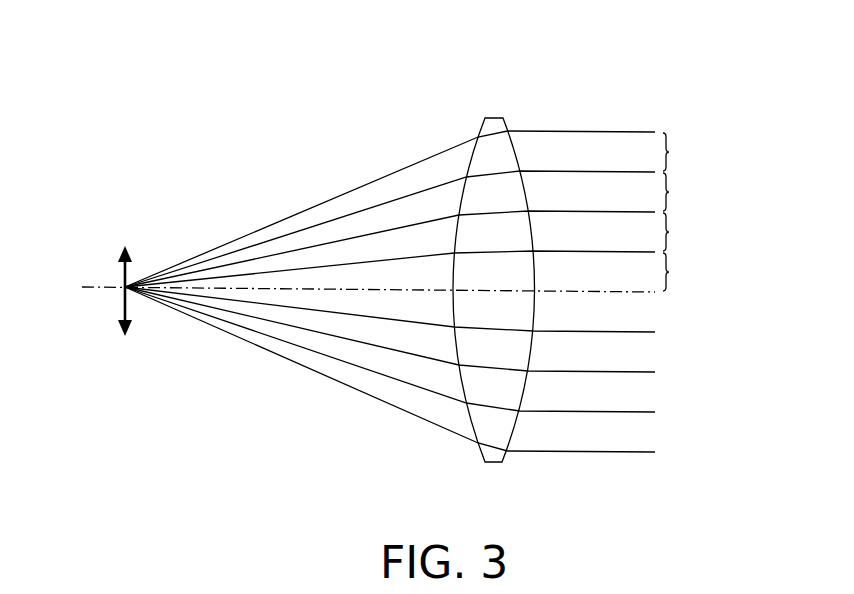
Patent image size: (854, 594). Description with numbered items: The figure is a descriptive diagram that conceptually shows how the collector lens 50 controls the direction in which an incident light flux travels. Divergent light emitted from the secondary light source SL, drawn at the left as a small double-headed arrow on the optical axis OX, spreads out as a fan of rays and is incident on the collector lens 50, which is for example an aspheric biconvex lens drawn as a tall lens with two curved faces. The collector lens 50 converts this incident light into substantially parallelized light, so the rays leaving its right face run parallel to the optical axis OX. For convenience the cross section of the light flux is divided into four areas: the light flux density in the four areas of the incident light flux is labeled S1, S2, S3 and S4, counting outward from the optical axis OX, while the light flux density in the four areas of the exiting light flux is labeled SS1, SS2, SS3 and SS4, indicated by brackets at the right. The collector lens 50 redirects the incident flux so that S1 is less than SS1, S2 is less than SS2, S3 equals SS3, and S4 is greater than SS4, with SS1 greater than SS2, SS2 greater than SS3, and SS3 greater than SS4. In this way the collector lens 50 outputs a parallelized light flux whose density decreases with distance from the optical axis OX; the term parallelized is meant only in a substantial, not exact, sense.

The collector lens 50 is at (496, 117).
The secondary light source SL is at (121, 269).
The optical axis OX is at (96, 289).
The light flux density in the first area of the incident light flux S1 is at (300, 275).
The light flux density in the second area of the incident light flux S2 is at (342, 254).
The light flux density in the third area of the incident light flux S3 is at (375, 218).
The light flux density in the fourth area of the incident light flux S4 is at (410, 182).
The light flux density in the first area of the exiting light flux SS1 is at (691, 272).
The light flux density in the second area of the exiting light flux SS2 is at (691, 232).
The light flux density in the third area of the exiting light flux SS3 is at (691, 192).
The light flux density in the fourth area of the exiting light flux SS4 is at (691, 152).